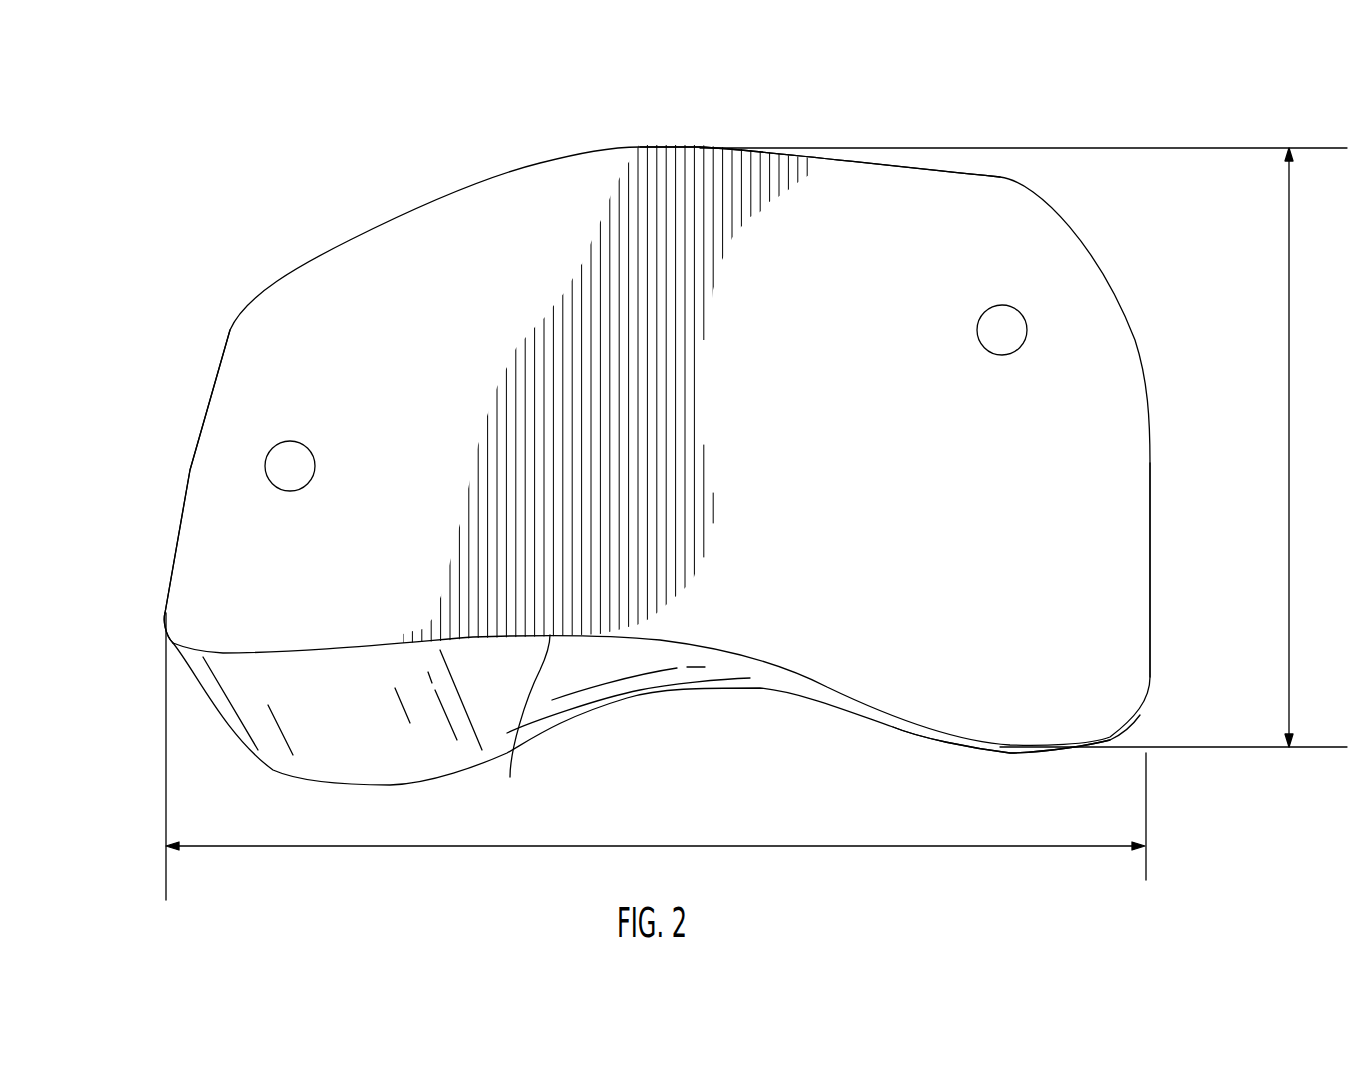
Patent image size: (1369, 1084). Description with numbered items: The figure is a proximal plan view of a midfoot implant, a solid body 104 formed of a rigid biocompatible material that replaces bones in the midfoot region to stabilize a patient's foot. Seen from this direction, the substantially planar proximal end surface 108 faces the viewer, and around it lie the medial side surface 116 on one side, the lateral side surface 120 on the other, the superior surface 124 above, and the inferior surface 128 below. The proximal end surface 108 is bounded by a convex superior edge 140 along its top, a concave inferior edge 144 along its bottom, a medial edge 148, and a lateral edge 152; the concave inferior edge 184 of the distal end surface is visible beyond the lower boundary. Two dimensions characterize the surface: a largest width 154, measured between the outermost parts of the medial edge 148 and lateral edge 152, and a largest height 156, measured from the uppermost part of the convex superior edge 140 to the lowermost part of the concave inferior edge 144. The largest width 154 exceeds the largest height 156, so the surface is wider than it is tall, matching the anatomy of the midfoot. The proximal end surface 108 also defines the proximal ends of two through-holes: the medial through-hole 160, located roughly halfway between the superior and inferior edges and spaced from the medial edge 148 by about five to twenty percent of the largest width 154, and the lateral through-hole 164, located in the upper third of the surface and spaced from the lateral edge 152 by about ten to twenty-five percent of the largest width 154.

The solid body 104 is at (940, 207).
The proximal end surface 108 is at (987, 650).
The medial side surface 116 is at (171, 502).
The lateral side surface 120 is at (1168, 542).
The superior surface 124 is at (845, 155).
The inferior surface 128 is at (630, 680).
The convex superior edge 140 is at (705, 147).
The concave inferior edge 144 is at (521, 724).
The medial edge 148 is at (167, 568).
The lateral edge 152 is at (1152, 458).
The largest width 154 is at (317, 847).
The largest height 156 is at (1292, 302).
The medial through-hole 160 is at (315, 466).
The lateral through-hole 164 is at (977, 327).
The concave inferior edge 184 is at (707, 688).